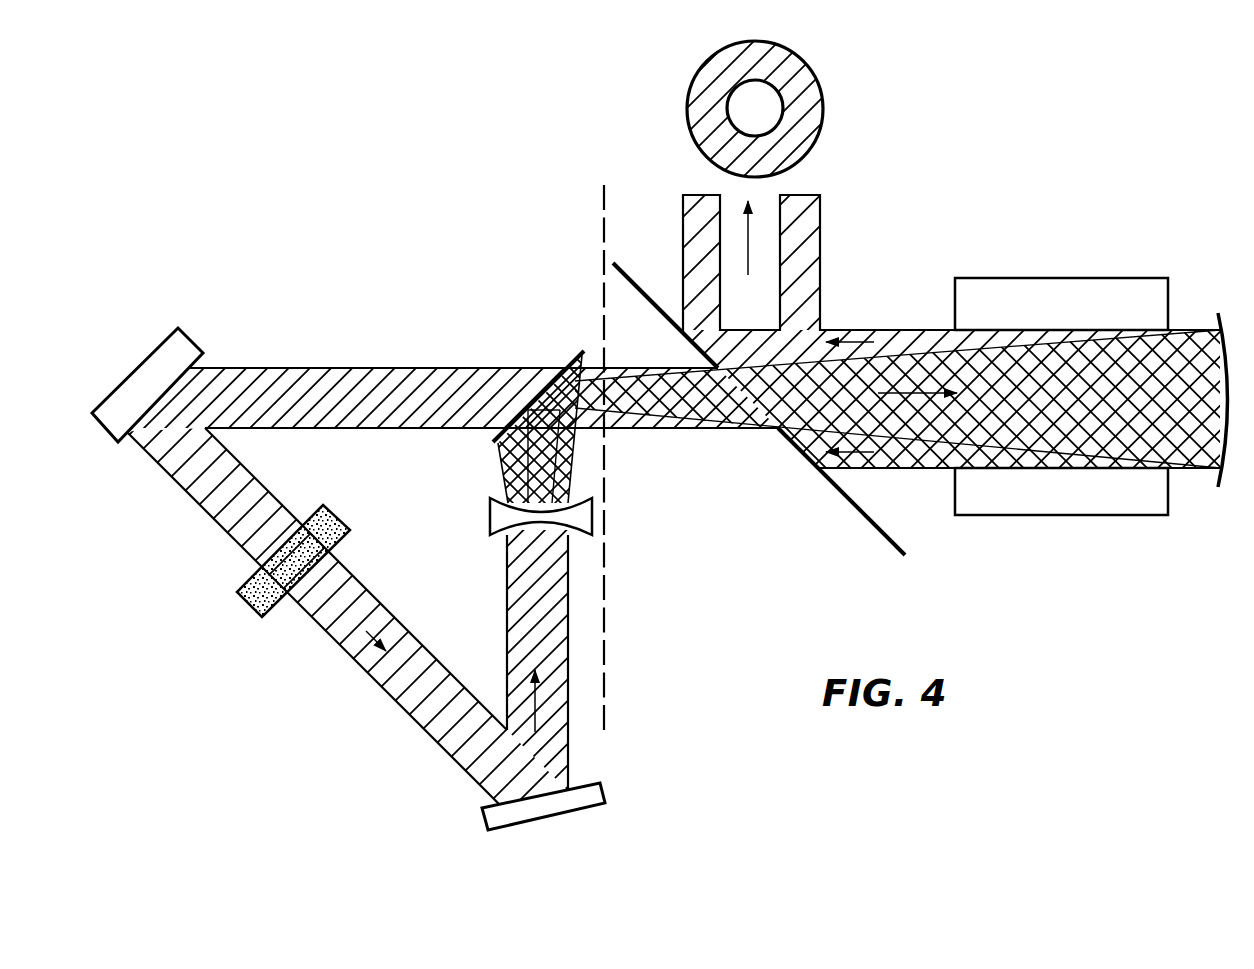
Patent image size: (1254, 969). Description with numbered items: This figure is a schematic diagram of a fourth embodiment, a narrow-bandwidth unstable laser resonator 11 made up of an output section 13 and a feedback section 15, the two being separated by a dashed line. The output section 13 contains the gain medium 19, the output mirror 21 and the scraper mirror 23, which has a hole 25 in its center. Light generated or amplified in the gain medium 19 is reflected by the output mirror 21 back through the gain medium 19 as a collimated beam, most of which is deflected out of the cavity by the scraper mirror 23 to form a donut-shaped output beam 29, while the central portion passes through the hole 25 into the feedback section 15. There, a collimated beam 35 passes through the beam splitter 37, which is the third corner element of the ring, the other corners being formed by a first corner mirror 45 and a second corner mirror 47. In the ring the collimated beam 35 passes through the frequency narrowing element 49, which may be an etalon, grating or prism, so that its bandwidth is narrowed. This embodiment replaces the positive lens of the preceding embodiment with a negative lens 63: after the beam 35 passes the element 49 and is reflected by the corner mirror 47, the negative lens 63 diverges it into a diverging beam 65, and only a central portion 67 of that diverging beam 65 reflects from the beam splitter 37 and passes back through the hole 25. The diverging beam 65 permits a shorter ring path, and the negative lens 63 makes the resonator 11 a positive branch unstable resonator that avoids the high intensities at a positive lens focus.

The unstable laser resonator 11 is at (447, 118).
The output section 13 is at (1031, 246).
The feedback section 15 is at (400, 273).
The gain medium 19 is at (1105, 278).
The output mirror 21 is at (1218, 480).
The scraper mirror 23 is at (900, 545).
The hole 25 is at (737, 396).
The output beam 29 is at (820, 273).
The collimated beam 35 is at (372, 368).
The beam splitter 37 is at (575, 358).
The corner mirror 45 is at (125, 380).
The corner mirror 47 is at (592, 806).
The frequency narrowing element 49 is at (246, 602).
The negative lens 63 is at (490, 522).
The diverging beam 65 is at (505, 478).
The central portion 67 is at (500, 462).